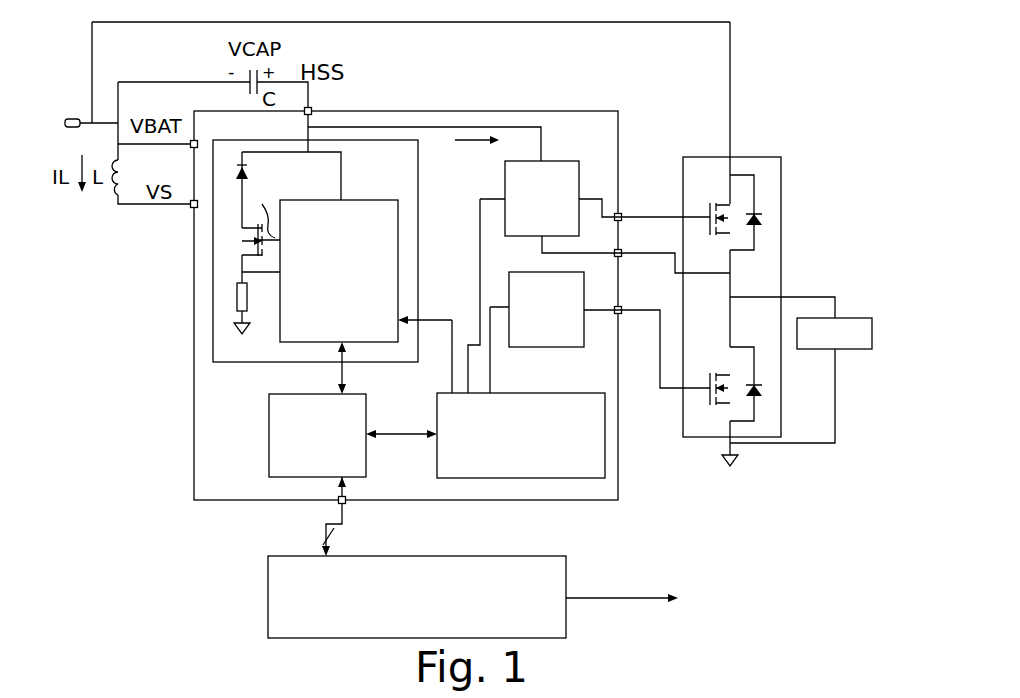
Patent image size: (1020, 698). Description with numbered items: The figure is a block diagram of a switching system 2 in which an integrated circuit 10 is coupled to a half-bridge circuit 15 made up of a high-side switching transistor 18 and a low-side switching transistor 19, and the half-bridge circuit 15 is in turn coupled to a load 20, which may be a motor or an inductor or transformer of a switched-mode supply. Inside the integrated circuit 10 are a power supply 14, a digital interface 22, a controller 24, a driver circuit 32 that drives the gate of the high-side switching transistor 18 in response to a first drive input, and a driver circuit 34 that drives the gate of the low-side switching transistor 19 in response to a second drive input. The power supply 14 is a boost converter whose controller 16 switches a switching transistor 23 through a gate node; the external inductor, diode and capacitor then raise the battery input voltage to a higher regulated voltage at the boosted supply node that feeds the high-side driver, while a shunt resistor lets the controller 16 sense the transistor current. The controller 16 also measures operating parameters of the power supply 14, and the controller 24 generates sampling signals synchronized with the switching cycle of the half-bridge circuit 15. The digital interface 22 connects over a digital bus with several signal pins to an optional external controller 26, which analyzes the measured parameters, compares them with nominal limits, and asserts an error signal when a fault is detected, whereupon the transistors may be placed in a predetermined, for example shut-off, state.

The switching system 2 is at (85, 42).
The integrated circuit 10 is at (575, 111).
The power supply 14 is at (418, 145).
The half-bridge circuit 15 is at (742, 260).
The controller 16 is at (398, 207).
The high-side switching transistor 18 is at (720, 237).
The low-side switching transistor 19 is at (722, 373).
The load 20 is at (845, 318).
The digital interface 22 is at (366, 398).
The switching transistor 23 is at (242, 243).
The controller 24 is at (505, 393).
The external controller 26 is at (510, 556).
The driver circuit 32 is at (556, 161).
The driver circuit 34 is at (568, 347).